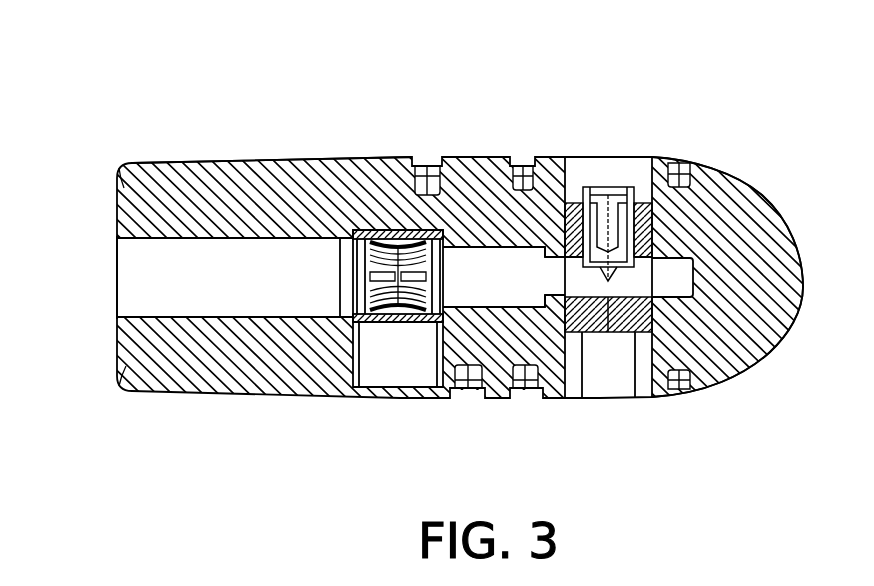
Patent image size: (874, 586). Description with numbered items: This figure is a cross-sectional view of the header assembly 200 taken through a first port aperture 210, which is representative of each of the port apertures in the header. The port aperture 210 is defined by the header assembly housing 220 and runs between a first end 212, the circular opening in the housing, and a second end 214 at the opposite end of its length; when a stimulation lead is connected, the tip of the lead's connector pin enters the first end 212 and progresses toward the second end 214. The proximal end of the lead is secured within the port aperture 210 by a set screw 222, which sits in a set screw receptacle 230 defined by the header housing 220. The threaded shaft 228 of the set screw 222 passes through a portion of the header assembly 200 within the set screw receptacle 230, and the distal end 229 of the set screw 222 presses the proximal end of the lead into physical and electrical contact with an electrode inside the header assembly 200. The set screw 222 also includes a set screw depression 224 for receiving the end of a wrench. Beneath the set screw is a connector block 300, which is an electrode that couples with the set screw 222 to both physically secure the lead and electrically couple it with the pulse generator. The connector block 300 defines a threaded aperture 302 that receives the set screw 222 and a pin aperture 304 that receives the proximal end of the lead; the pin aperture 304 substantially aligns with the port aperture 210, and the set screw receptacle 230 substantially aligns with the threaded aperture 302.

The header assembly 200 is at (437, 237).
The port aperture 210 is at (143, 277).
The first end 212 is at (117, 263).
The second end 214 is at (760, 323).
The header assembly housing 220 is at (257, 190).
The set screw 222 is at (633, 187).
The set screw depression 224 is at (608, 187).
The threaded shaft 228 is at (565, 258).
The distal end 229 is at (615, 281).
The set screw receptacle 230 is at (583, 170).
The connector block 300 is at (594, 330).
The threaded aperture 302 is at (568, 253).
The pin aperture 304 is at (600, 288).